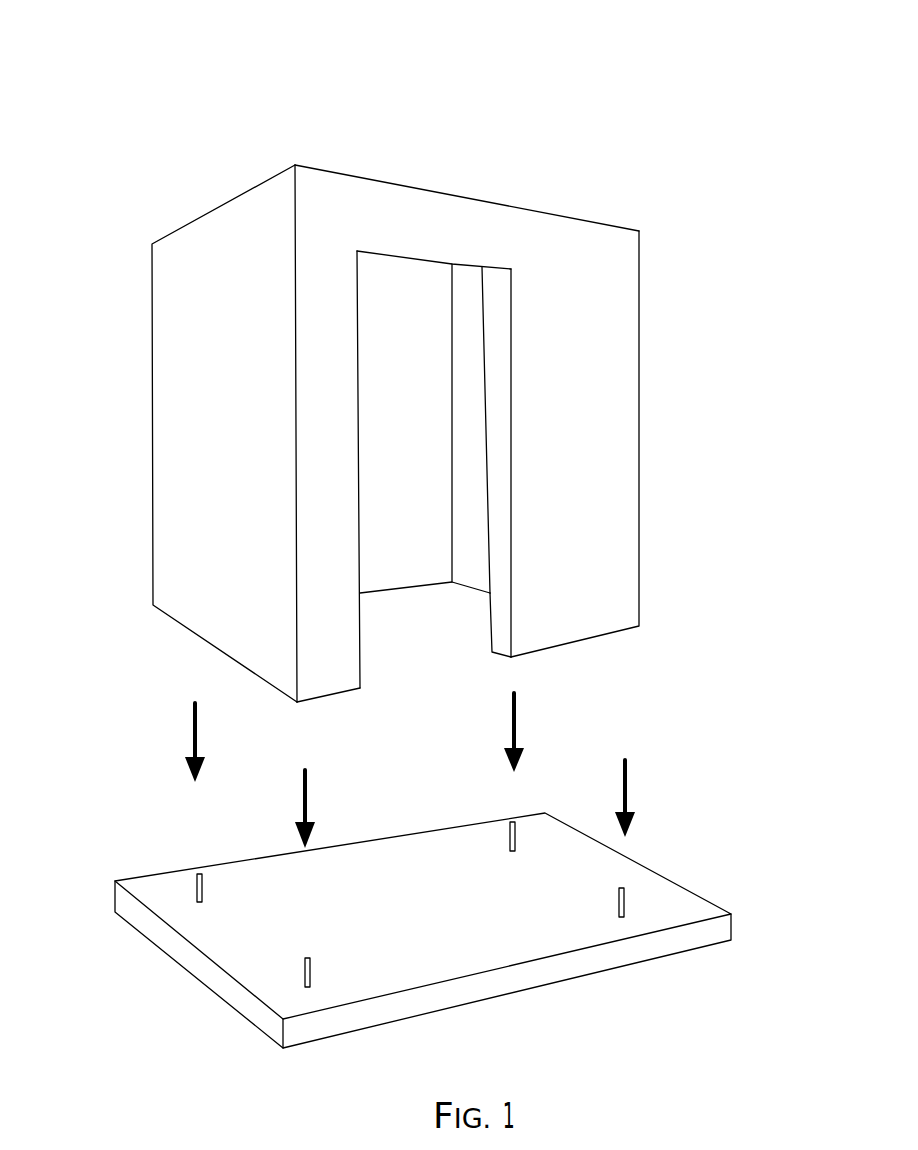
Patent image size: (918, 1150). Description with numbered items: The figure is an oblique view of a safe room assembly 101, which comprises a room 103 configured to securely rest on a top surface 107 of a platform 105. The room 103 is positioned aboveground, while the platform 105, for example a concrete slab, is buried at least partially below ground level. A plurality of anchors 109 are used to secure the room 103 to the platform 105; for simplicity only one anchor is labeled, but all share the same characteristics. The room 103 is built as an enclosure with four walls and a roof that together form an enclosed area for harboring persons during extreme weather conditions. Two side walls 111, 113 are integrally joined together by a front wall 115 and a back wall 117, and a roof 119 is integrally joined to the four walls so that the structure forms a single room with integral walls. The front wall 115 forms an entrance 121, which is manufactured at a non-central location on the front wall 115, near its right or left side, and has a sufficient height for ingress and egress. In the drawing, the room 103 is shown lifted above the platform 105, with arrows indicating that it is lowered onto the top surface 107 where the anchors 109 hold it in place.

The safe room assembly 101 is at (767, 62).
The room 103 is at (133, 142).
The platform 105 is at (223, 983).
The top surface 107 is at (423, 916).
The anchors 109 is at (197, 884).
The side wall 111 is at (128, 445).
The side wall 113 is at (483, 580).
The front wall 115 is at (615, 512).
The back wall 117 is at (372, 569).
The roof 119 is at (465, 182).
The entrance 121 is at (503, 666).